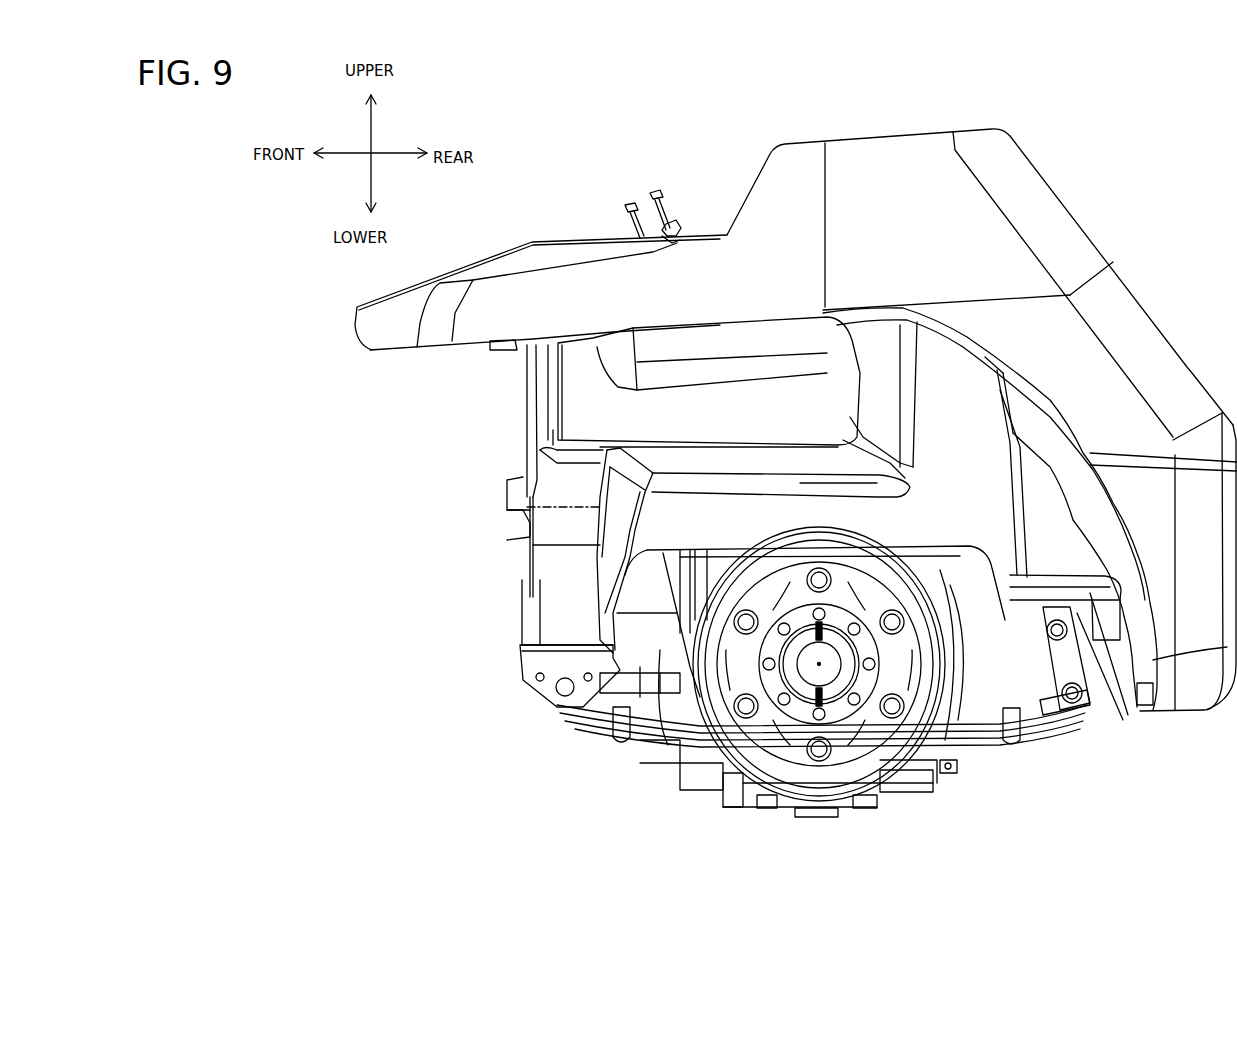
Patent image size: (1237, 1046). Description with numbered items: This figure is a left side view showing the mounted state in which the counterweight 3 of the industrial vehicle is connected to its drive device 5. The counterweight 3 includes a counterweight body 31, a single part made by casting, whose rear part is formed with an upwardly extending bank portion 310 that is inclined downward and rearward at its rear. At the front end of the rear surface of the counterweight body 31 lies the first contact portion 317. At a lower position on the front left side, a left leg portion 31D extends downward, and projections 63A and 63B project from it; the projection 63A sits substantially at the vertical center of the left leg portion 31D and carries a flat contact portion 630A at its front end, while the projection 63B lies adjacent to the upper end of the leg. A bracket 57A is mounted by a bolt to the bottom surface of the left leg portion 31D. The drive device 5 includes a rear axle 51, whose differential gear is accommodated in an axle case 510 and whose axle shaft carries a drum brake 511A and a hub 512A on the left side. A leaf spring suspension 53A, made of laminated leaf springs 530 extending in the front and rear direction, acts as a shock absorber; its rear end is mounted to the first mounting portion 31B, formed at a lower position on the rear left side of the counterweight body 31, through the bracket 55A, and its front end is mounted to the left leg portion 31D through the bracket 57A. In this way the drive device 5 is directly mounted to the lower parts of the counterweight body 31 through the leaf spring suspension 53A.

The counterweight 3 is at (1075, 133).
The bank portion 310 is at (894, 148).
The counterweight body 31 is at (372, 352).
The first contact portion 317 is at (503, 350).
The projection 63B is at (527, 357).
The projection 63A is at (517, 483).
The flat contact portion 630A is at (507, 500).
The left leg portion 31D is at (540, 593).
The bracket 57A is at (528, 665).
The leaf springs 530 is at (1000, 748).
The leaf spring suspension 53A is at (1056, 734).
The bracket 55A is at (1058, 667).
The axle case 510 is at (665, 777).
The drive device 5 is at (965, 790).
The rear axle 51 is at (962, 650).
The drum brake 511A is at (868, 548).
The hub 512A is at (785, 590).
The first mounting portion 31B is at (1080, 617).